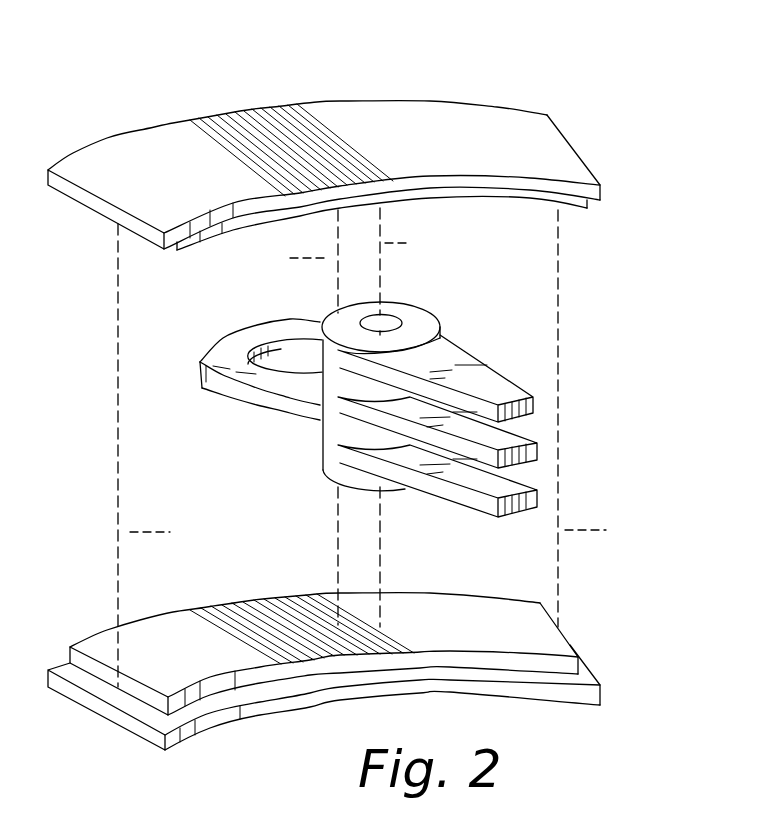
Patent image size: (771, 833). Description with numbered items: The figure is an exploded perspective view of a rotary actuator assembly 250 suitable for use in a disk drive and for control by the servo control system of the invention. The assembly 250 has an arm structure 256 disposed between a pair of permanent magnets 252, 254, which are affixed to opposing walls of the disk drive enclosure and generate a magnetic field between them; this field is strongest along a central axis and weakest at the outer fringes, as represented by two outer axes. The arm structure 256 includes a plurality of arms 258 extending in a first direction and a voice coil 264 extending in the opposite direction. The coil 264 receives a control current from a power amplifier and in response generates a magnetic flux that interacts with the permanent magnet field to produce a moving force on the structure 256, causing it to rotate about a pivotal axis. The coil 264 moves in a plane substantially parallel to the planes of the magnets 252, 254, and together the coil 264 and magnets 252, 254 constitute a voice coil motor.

The rotary actuator assembly 250 is at (607, 112).
The permanent magnet 252 is at (568, 268).
The permanent magnet 254 is at (565, 638).
The arm structure 256 is at (471, 332).
The arms 258 is at (536, 405).
The voice coil 264 is at (258, 340).